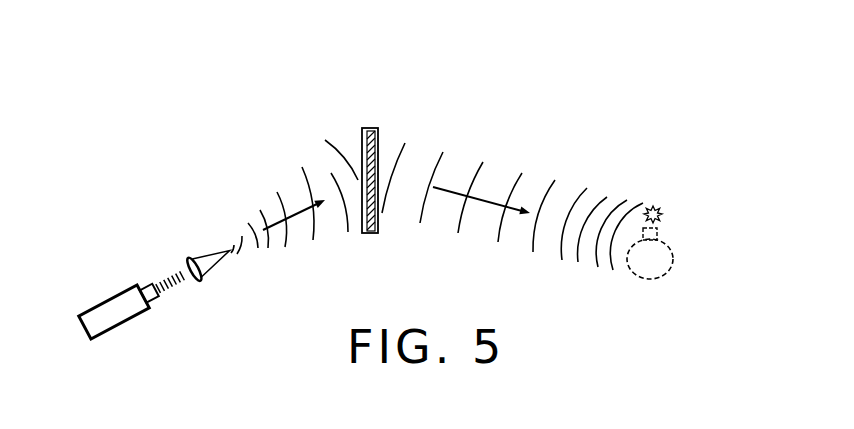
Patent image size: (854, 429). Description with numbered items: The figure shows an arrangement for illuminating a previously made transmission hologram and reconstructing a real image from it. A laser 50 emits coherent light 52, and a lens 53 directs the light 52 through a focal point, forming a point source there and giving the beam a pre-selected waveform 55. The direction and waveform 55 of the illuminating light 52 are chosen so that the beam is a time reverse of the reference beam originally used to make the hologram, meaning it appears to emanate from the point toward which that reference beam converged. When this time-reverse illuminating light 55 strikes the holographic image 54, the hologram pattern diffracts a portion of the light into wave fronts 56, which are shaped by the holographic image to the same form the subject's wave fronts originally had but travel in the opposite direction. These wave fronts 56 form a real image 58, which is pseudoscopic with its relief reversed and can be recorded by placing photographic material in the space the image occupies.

The laser 50 is at (98, 315).
The coherent light 52 is at (170, 278).
The lens 53 is at (187, 260).
The holographic image 54 is at (369, 116).
The waveform 55 is at (286, 202).
The wave fronts 56 is at (516, 168).
The real orthoscopic image 58 is at (667, 273).